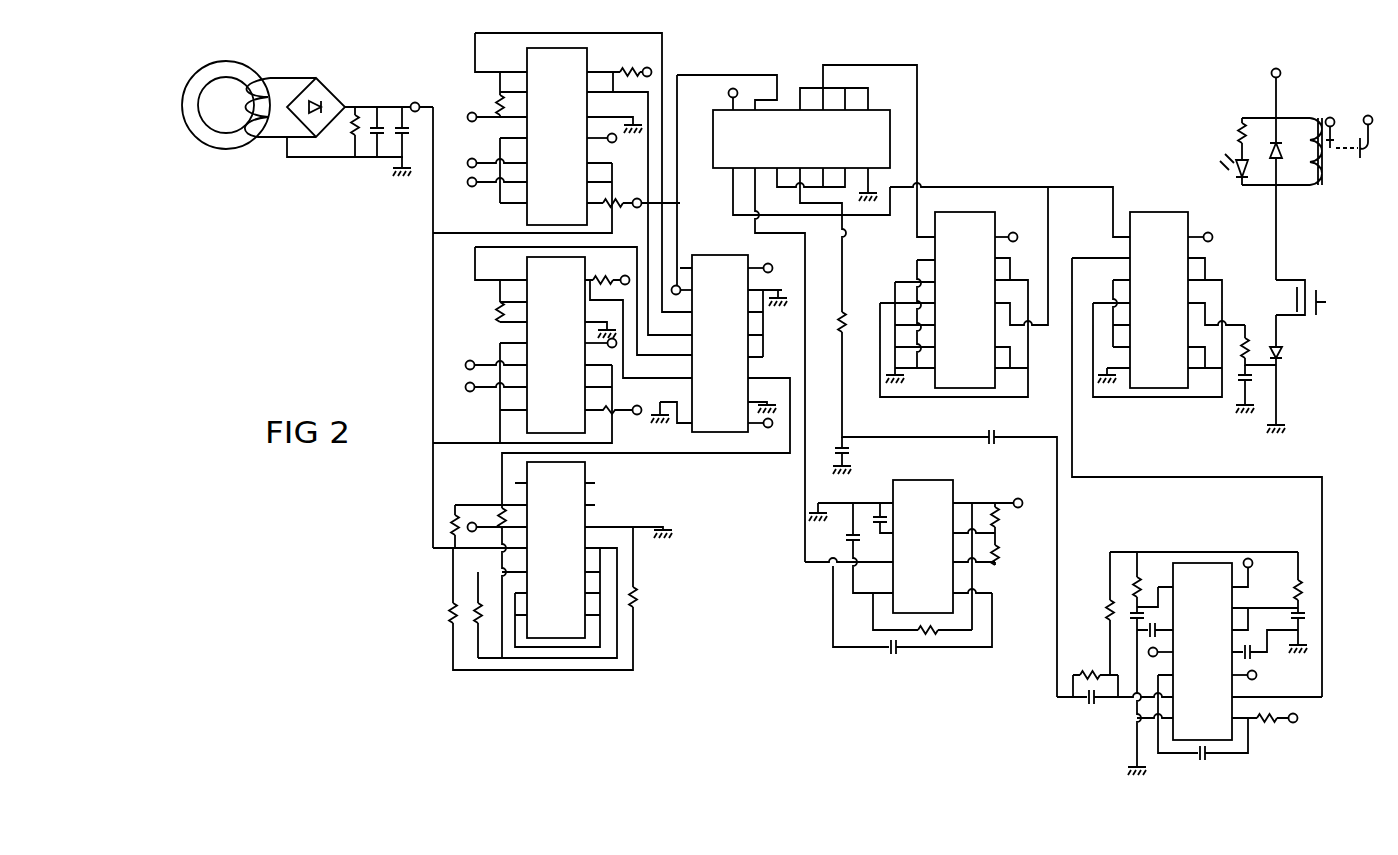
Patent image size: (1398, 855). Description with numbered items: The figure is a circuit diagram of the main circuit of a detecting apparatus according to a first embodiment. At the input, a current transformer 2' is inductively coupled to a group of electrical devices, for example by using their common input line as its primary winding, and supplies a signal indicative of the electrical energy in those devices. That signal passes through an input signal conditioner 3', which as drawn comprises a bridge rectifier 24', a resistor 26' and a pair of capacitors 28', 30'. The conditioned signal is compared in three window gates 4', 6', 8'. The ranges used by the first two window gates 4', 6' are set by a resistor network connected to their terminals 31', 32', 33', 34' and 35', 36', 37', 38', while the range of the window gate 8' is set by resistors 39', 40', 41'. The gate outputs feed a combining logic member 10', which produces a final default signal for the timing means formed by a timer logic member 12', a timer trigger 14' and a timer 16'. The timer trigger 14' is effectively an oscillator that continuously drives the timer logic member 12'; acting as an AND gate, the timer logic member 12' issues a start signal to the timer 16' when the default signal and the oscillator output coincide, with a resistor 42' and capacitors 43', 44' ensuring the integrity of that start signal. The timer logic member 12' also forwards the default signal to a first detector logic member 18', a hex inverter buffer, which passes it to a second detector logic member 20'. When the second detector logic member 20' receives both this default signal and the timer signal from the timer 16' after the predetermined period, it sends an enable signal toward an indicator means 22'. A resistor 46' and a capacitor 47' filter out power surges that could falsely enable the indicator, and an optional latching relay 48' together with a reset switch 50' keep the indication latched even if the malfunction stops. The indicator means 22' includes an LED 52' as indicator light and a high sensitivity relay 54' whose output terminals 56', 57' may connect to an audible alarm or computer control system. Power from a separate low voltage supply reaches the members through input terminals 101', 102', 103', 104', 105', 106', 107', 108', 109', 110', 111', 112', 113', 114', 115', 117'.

The current transformer 2' is at (226, 88).
The bridge rectifier 24' is at (322, 89).
The input signal conditioner 3' is at (389, 72).
The resistor 26' is at (326, 154).
The capacitor 28' is at (357, 159).
The capacitor 30' is at (408, 162).
The window gate 4' is at (557, 136).
The input terminal 101' is at (475, 98).
The terminal 31' is at (482, 150).
The terminal 32' is at (487, 203).
The input terminal 102' is at (622, 58).
The terminal 33' is at (650, 166).
The terminal 34' is at (655, 205).
The window gate 6' is at (556, 345).
The terminal 35' is at (483, 349).
The terminal 36' is at (483, 407).
The input terminal 103' is at (607, 266).
The terminal 37' is at (578, 371).
The terminal 38' is at (621, 431).
The combining logic member 10' is at (720, 343).
The input terminal 105' is at (696, 260).
The input terminal 106' is at (762, 253).
The input terminal 107' is at (768, 451).
The timer logic member 12' is at (801, 139).
The input terminal 108' is at (709, 97).
The resistor 42' is at (860, 305).
The capacitor 43' is at (872, 456).
The capacitor 44' is at (986, 456).
The first detector logic member 18' is at (965, 300).
The input terminal 114' is at (1011, 218).
The second detector logic member 20' is at (1159, 300).
The input terminal 115' is at (1221, 223).
The input terminal 117' is at (1248, 59).
The indicator means 22' is at (1232, 133).
The LED 52' is at (1210, 174).
The high sensitivity relay 54' is at (1323, 115).
The output terminal 56' is at (1339, 110).
The output terminal 57' is at (1364, 159).
The reset switch 50' is at (1309, 289).
The latching relay 48' is at (1307, 386).
The resistor 46' is at (1255, 317).
The capacitor 47' is at (1281, 389).
The window gate 8' is at (556, 550).
The input terminal 104' is at (483, 502).
The resistor 39' is at (424, 607).
The resistor 40' is at (443, 625).
The resistor 41' is at (660, 601).
The timer trigger 14' is at (923, 546).
The input terminal 109' is at (1027, 529).
The timer 16' is at (1202, 651).
The input terminal 112' is at (1235, 538).
The input terminal 110' is at (1119, 643).
The input terminal 113' is at (1266, 685).
The input terminal 111' is at (1279, 738).